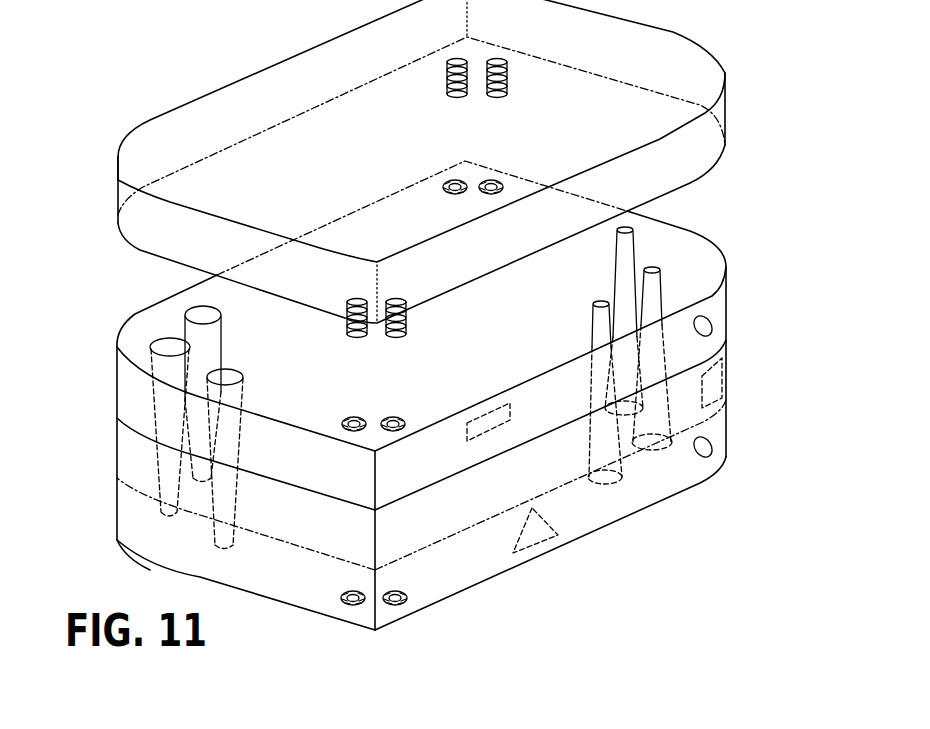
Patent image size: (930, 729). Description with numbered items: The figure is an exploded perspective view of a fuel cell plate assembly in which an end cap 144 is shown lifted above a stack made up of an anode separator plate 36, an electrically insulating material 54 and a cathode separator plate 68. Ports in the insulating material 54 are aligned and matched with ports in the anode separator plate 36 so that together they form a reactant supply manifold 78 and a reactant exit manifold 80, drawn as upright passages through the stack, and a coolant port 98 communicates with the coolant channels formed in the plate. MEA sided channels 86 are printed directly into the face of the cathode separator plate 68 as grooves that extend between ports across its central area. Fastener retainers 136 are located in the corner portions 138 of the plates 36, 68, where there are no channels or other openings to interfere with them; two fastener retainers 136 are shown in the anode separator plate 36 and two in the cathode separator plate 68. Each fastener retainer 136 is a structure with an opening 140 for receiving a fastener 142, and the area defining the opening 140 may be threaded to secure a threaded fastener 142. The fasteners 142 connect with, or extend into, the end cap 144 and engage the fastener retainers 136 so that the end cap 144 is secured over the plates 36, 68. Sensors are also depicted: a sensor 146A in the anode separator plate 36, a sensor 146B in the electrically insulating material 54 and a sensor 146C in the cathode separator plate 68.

The anode separator plate 36 is at (717, 418).
The electrically insulating material 54 is at (440, 510).
The cathode separator plate 68 is at (162, 322).
The reactant supply manifold 78 is at (222, 338).
The reactant exit manifold 80 is at (243, 402).
The MEA sided channel 86 is at (592, 334).
The coolant port 98 is at (150, 345).
The fastener retainer 136 is at (487, 202).
The corner portion 138 is at (468, 165).
The opening 140 is at (450, 180).
The fastener 142 is at (497, 57).
The end cap 144 is at (118, 198).
The sensor 146A is at (530, 541).
The sensor 146B is at (724, 392).
The sensor 146C is at (487, 414).